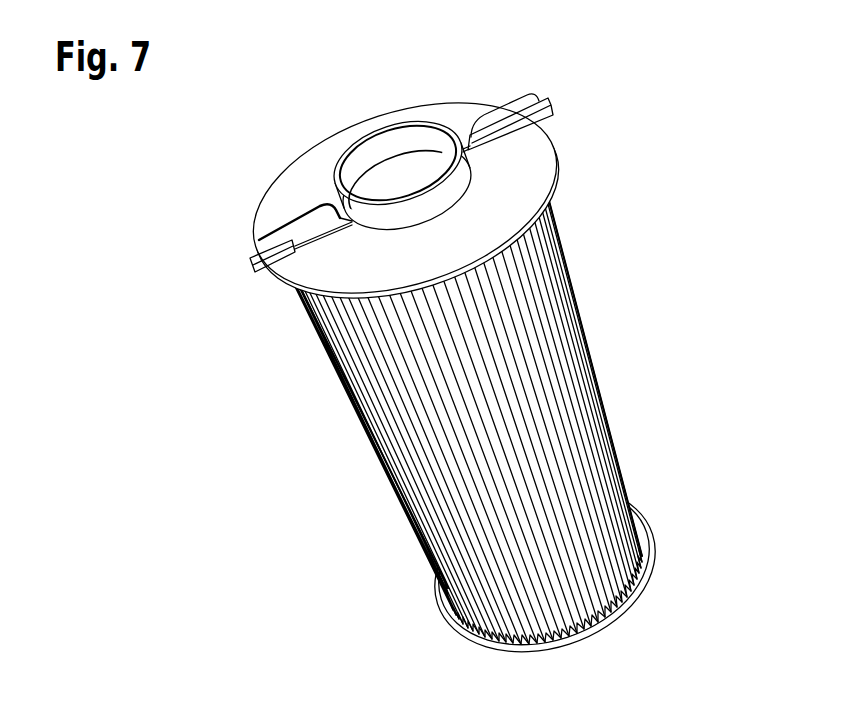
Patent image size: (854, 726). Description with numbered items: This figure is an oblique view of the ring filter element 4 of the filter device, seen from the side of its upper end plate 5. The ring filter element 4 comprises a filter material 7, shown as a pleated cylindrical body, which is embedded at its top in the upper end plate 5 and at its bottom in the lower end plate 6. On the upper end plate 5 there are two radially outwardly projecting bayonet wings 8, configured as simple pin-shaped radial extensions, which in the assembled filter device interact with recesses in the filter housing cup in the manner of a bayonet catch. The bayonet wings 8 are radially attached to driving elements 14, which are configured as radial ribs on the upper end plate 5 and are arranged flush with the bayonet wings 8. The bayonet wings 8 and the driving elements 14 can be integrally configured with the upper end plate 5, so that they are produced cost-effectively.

The ring filter element 4 is at (577, 190).
The upper end plate 5 is at (305, 193).
The lower end plate 6 is at (642, 568).
The filter material 7 is at (585, 357).
The bayonet wing 8 is at (556, 117).
The driving element 14 is at (494, 125).